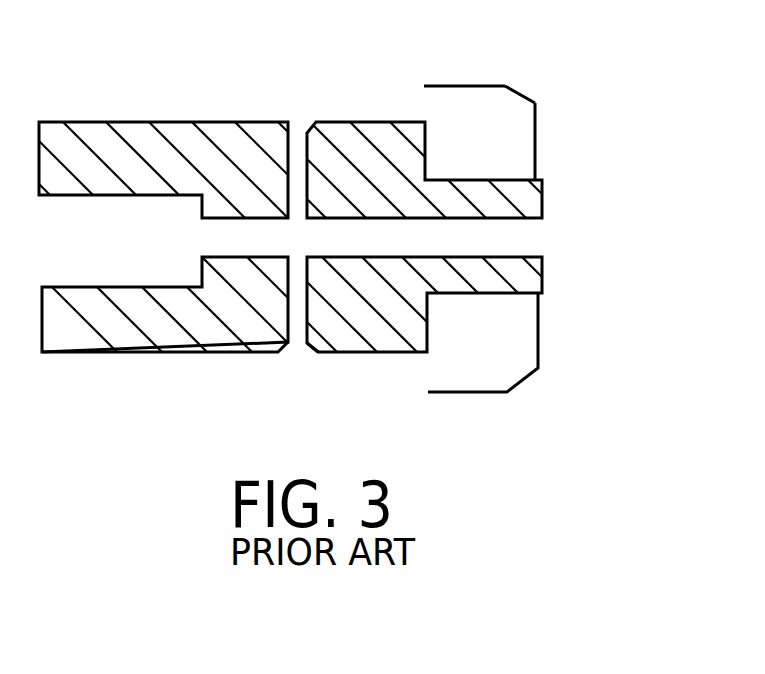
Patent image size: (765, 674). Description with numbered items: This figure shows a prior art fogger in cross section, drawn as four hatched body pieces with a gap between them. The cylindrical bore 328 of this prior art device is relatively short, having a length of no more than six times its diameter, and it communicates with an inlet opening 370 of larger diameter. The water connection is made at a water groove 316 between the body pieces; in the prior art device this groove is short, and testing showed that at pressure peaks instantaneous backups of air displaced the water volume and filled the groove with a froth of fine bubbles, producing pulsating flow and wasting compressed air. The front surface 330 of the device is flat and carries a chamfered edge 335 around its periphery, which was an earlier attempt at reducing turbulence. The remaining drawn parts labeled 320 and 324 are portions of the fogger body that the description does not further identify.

The water groove 316 is at (295, 127).
The lower ring segment 320 is at (147, 328).
The step joint 324 is at (297, 302).
The cylindrical bore 328 is at (390, 240).
The front surface 330 is at (537, 127).
The chamfered edge 335 is at (517, 92).
The inlet opening 370 is at (113, 215).